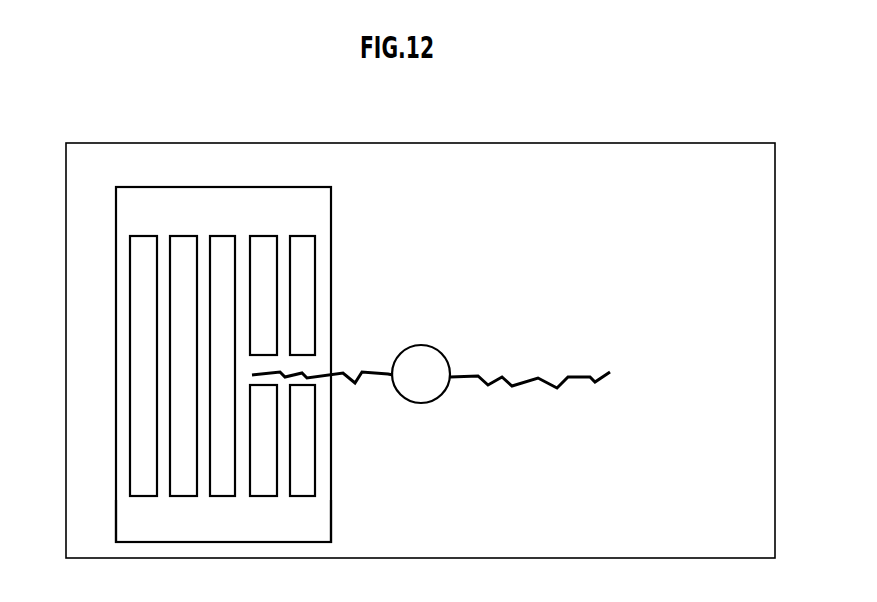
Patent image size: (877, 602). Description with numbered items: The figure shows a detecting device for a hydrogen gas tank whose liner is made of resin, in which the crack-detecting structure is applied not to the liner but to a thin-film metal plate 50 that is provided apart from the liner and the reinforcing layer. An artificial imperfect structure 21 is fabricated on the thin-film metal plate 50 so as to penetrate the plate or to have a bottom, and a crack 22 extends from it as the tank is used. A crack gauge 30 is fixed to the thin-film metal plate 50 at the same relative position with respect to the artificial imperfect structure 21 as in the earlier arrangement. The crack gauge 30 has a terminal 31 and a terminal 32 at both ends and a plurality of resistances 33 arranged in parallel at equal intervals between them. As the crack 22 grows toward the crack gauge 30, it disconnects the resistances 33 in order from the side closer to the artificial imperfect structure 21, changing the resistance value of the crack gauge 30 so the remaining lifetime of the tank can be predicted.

The thin-film metal plate 50 is at (653, 143).
The crack gauge 30 is at (176, 353).
The terminal 31 is at (133, 197).
The terminal 32 is at (152, 535).
The resistances 33 is at (203, 328).
The crack 22 is at (355, 372).
The artificial imperfect structure 21 is at (420, 352).